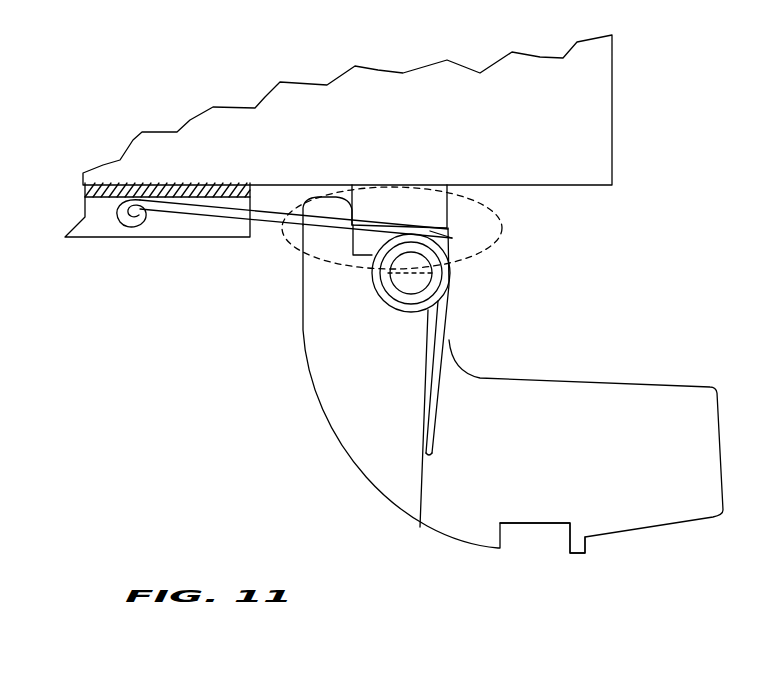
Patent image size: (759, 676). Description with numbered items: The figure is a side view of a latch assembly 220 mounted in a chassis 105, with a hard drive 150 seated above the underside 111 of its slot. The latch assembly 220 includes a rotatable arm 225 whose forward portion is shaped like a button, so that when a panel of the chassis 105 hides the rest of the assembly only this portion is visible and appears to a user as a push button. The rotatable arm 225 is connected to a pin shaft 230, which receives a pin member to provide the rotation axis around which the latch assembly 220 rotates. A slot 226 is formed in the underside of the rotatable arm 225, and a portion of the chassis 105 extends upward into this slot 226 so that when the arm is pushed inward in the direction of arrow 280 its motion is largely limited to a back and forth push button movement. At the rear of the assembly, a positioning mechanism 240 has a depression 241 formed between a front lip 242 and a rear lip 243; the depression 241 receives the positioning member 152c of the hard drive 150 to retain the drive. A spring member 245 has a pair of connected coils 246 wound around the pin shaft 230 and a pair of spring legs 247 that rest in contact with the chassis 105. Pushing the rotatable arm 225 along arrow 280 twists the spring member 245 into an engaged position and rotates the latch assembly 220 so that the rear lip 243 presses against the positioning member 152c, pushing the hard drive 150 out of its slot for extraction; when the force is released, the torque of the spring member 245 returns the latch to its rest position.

The chassis 105 is at (157, 210).
The underside of a hard drive slot 111 is at (87, 191).
The hard drive 150 is at (347, 110).
The positioning member 152c is at (399, 206).
The latch assembly 220 is at (660, 349).
The rotatable arm 225 is at (513, 389).
The slot 226 is at (568, 535).
The pin shaft 230 is at (430, 283).
The positioning mechanism 240 is at (500, 221).
The depression 241 is at (357, 255).
The front lip 242 is at (438, 235).
The rear lip 243 is at (327, 210).
The spring member 245 is at (415, 400).
The pair of connected coils 246 is at (385, 307).
The pair of spring legs 247 is at (223, 213).
The arrow 280 is at (708, 601).